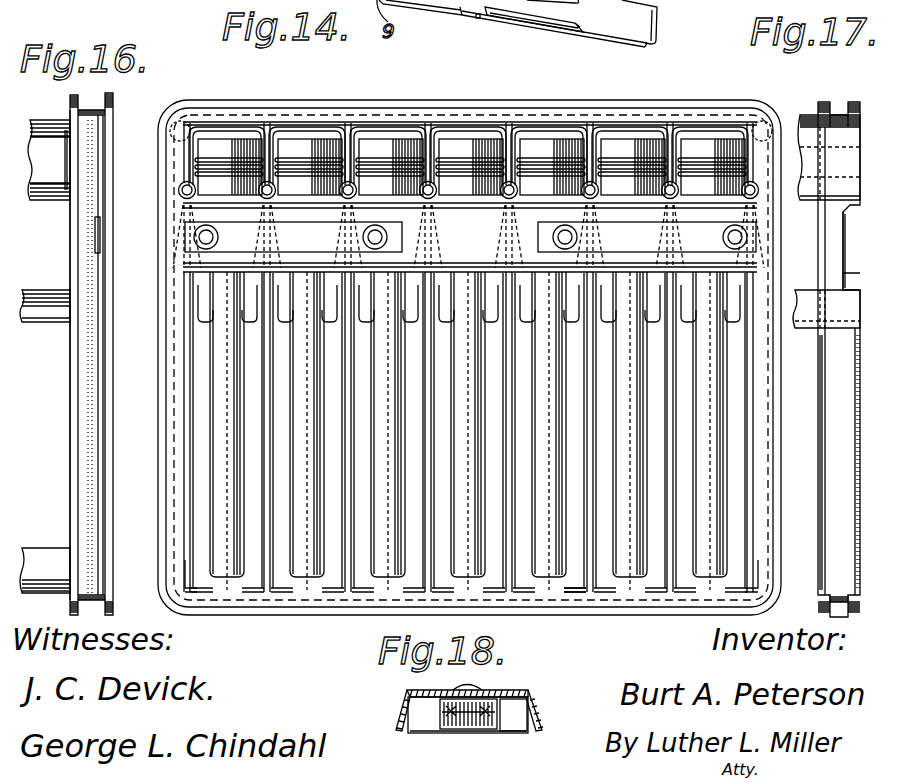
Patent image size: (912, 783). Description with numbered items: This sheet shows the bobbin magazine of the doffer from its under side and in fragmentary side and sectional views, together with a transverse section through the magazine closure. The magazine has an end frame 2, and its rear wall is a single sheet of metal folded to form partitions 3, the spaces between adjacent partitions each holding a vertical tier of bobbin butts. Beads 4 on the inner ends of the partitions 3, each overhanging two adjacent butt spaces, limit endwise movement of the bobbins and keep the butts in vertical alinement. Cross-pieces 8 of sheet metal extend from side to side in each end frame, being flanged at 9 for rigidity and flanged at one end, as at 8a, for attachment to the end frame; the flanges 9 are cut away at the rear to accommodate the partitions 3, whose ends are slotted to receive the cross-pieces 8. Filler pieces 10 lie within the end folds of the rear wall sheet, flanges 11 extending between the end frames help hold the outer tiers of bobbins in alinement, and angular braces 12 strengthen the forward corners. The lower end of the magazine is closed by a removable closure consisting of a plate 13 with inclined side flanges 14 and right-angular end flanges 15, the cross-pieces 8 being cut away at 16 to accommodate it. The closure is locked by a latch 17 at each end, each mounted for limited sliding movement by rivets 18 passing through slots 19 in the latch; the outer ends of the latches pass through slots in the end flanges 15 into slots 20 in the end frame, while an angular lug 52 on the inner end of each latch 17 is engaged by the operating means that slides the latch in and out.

In FIG. 14, the end frame 2 is at (660, 106).
In FIG. 16, the end frame 2 is at (91, 354).
In FIG. 17, the end frame 2 is at (822, 104).
In FIG. 14, the partition 3 is at (350, 150).
In FIG. 16, the partition 3 is at (42, 160).
In FIG. 17, the partition 3 is at (810, 170).
In FIG. 14, the bead 4 is at (505, 200).
In FIG. 16, the bead 4 is at (48, 185).
In FIG. 14, the cross-piece 8 is at (665, 455).
In FIG. 17, the cross-piece 8 is at (830, 428).
In FIG. 14, the flange of cross-piece 8a is at (620, 594).
In FIG. 17, the flange 9 is at (822, 477).
In FIG. 14, the filler piece 10 is at (183, 122).
In FIG. 14, the flange 11 is at (198, 322).
In FIG. 16, the flange 11 is at (42, 325).
In FIG. 17, the flange 11 is at (746, 325).
In FIG. 14, the angular brace 12 is at (192, 580).
In FIG. 16, the angular brace 12 is at (45, 558).
In FIG. 18, the plate 13 is at (513, 688).
In FIG. 18, the inclined side flange 14 is at (398, 713).
In FIG. 18, the end flange 15 is at (520, 726).
In FIG. 17, the cut-away 16 is at (840, 240).
In FIG. 14, the latch 17 is at (280, 235).
In FIG. 14, the rivet 18 is at (218, 238).
In FIG. 14, the slot 19 is at (190, 265).
In FIG. 16, the slot 20 is at (101, 238).
In FIG. 18, the angular lug 52 is at (452, 732).